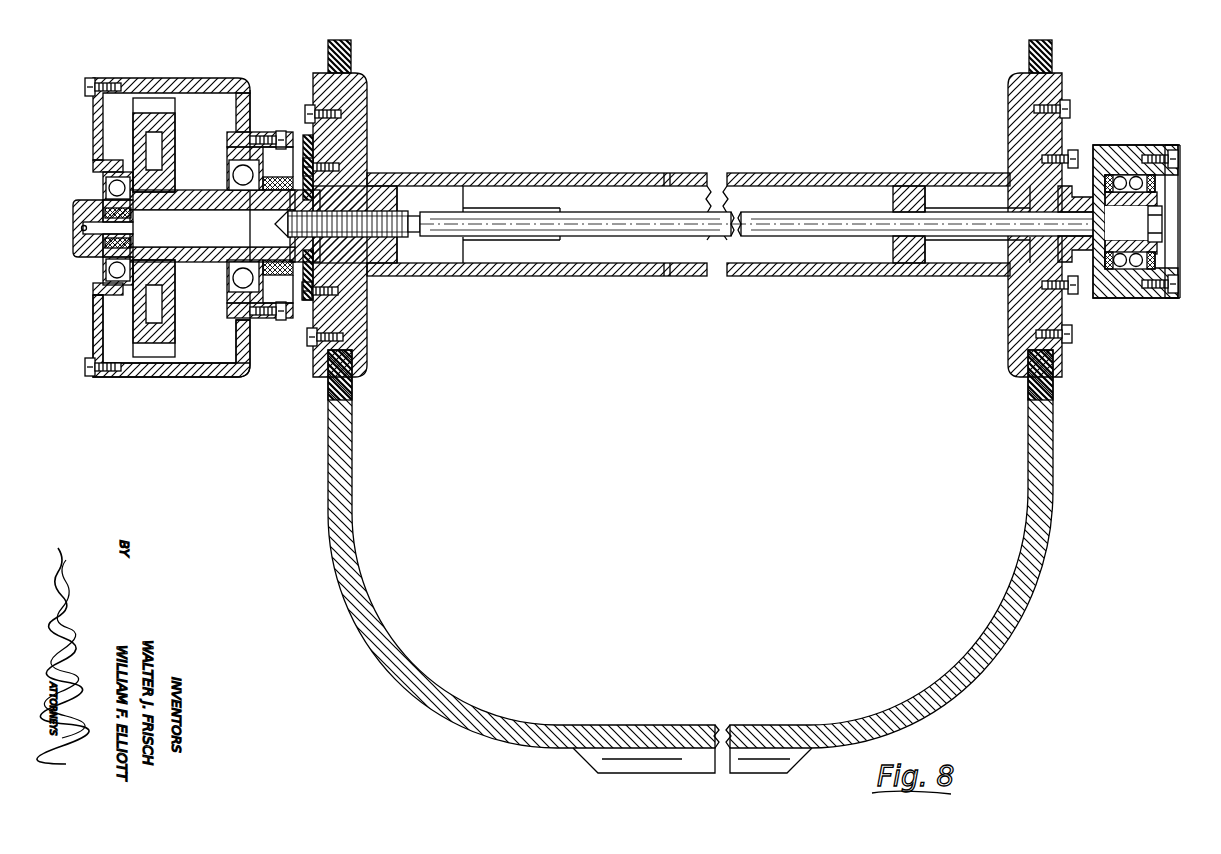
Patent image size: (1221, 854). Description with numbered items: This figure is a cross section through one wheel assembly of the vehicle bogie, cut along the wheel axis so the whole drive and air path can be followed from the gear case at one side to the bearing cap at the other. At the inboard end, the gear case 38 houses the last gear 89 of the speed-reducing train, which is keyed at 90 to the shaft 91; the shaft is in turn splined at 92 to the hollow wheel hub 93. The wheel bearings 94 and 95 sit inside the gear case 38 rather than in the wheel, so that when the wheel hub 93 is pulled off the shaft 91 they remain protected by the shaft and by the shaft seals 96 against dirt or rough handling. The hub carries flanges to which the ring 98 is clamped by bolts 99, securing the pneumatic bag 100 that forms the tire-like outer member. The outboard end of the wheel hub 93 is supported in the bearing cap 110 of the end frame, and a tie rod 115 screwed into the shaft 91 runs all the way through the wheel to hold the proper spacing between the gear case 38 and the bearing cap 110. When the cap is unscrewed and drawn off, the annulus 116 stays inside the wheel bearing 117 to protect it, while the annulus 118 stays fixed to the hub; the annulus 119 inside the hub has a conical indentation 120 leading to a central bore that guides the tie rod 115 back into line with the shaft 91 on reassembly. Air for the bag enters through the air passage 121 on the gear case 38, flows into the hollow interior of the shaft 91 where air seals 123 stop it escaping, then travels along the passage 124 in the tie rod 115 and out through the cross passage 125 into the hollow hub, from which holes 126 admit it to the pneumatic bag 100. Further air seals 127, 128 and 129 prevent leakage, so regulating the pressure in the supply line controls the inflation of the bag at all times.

The gear case 38 is at (200, 378).
The gear 89 is at (165, 118).
The key 90 is at (157, 190).
The shaft 91 is at (203, 196).
The spline 92 is at (363, 198).
The wheel hub 93 is at (365, 133).
The wheel bearing 94 is at (233, 280).
The wheel bearing 95 is at (104, 270).
The shaft seals 96 is at (272, 206).
The ring 98 is at (325, 370).
The bolts 99 is at (318, 340).
The pneumatic bag 100 is at (1025, 545).
The bearing cap 110 is at (1163, 298).
The tie rod 115 is at (995, 233).
The annulus 116 is at (1150, 200).
The wheel bearing 117 is at (1127, 177).
The annulus 118 is at (1077, 193).
The annulus 119 is at (907, 266).
The conical indentation 120 is at (924, 248).
The air passage 121 is at (82, 226).
The air seals 123 is at (98, 246).
The passage 124 is at (502, 230).
The cross passage 125 is at (560, 214).
The holes 126 is at (670, 175).
The air seal 127 is at (313, 190).
The air seal 128 is at (1162, 243).
The air seal 129 is at (1127, 270).